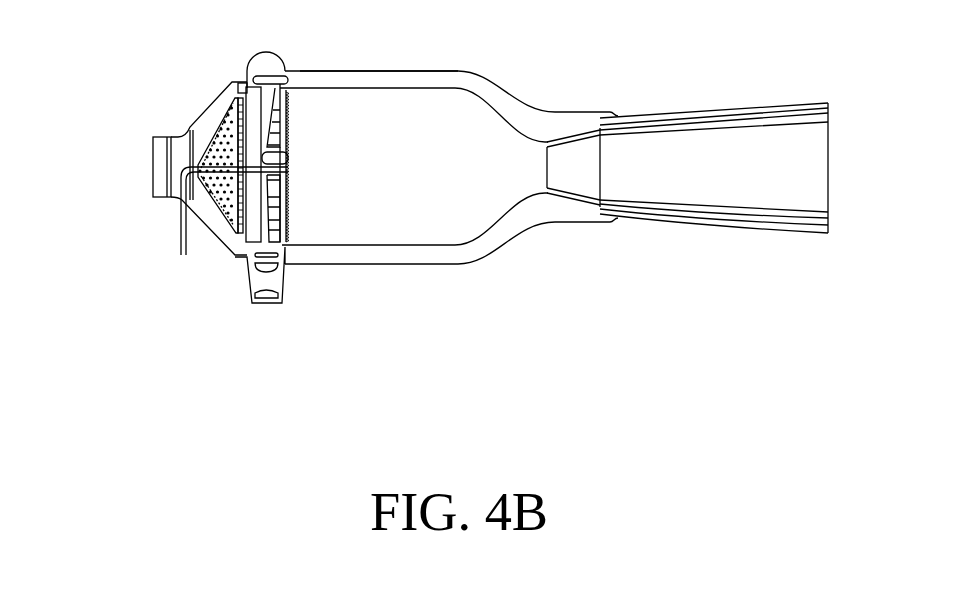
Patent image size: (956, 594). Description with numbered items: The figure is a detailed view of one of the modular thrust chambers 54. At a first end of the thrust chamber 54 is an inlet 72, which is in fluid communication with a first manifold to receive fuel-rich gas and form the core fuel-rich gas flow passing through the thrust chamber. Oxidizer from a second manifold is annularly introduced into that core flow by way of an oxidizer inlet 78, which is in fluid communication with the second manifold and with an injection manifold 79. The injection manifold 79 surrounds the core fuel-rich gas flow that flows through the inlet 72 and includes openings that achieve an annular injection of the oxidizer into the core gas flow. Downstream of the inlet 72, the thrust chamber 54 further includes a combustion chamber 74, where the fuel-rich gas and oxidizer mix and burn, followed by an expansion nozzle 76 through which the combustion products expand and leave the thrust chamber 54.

The thrust chamber 54 is at (477, 280).
The inlet 72 is at (133, 152).
The combustion chamber 74 is at (395, 67).
The expansion nozzle 76 is at (737, 103).
The oxidizer inlet 78 is at (281, 308).
The injection manifold 79 is at (265, 282).